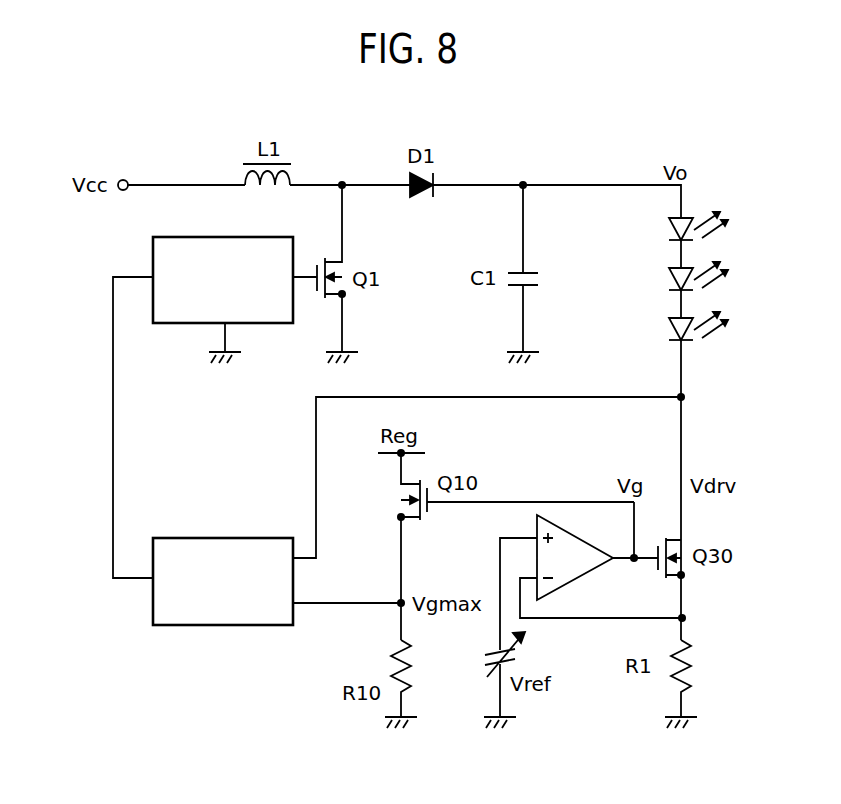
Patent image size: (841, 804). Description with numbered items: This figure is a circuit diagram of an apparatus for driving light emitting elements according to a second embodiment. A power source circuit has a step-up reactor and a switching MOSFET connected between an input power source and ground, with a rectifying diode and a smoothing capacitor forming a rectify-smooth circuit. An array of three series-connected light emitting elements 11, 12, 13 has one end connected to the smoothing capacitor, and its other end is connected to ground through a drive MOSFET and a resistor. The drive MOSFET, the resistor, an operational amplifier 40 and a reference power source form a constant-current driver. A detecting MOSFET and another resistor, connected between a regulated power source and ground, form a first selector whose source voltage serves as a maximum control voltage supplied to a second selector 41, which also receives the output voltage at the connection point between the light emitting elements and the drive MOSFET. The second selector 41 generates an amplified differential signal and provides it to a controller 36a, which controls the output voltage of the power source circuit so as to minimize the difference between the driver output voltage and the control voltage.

The light emitting element 11 is at (668, 230).
The light emitting element 12 is at (668, 280).
The light emitting element 13 is at (668, 330).
The controller 36a is at (153, 263).
The operational amplifier 40 is at (585, 586).
The second selector 41 is at (233, 538).